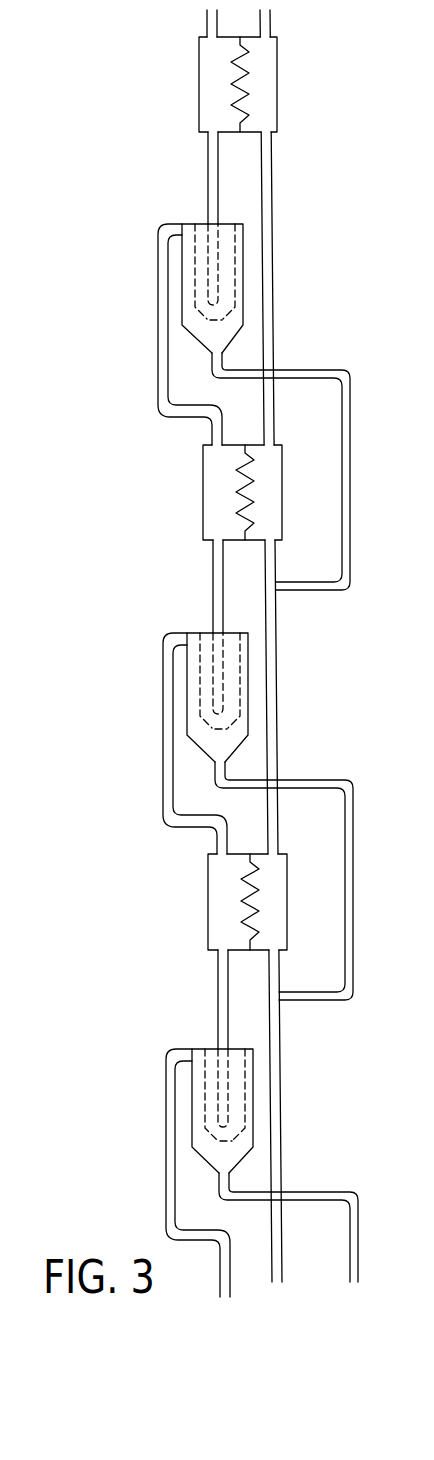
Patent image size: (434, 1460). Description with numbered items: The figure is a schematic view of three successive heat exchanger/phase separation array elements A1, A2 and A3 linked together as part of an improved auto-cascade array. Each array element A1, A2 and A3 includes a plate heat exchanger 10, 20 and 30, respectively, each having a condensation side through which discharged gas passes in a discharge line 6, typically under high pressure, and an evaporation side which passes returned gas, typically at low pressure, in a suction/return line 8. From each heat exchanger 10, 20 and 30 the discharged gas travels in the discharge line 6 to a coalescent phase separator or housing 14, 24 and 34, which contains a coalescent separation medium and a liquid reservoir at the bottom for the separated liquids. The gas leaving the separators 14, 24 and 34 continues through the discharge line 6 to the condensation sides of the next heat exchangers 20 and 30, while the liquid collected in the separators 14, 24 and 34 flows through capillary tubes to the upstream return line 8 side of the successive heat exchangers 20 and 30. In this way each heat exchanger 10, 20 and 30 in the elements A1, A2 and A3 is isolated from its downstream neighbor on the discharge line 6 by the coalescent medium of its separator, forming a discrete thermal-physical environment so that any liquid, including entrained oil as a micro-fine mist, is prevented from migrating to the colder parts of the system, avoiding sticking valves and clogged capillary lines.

The discharge line 6 is at (206, 30).
The suction/return line 8 is at (271, 32).
The heat exchanger 10 is at (294, 87).
The coalescent phase separator 14 is at (234, 210).
The heat exchanger 20 is at (172, 457).
The coalescent phase separator 24 is at (202, 619).
The heat exchanger 30 is at (188, 877).
The coalescent phase separator 34 is at (208, 1034).
The heat exchanger/phase separation array element A1 is at (162, 171).
The heat exchanger/phase separation array element A2 is at (150, 618).
The heat exchanger/phase separation array element A3 is at (158, 948).